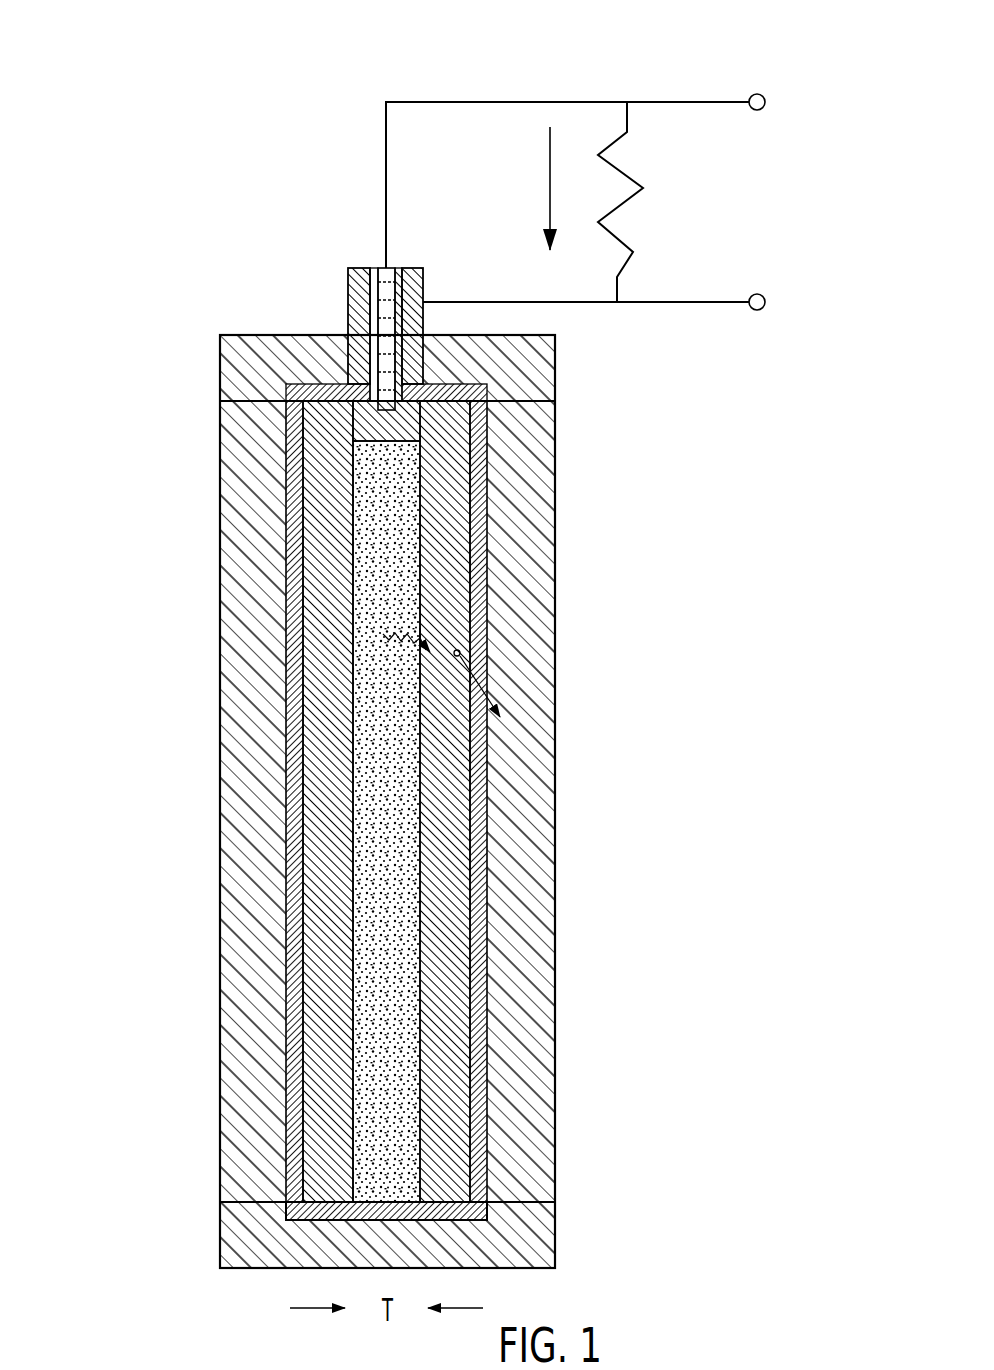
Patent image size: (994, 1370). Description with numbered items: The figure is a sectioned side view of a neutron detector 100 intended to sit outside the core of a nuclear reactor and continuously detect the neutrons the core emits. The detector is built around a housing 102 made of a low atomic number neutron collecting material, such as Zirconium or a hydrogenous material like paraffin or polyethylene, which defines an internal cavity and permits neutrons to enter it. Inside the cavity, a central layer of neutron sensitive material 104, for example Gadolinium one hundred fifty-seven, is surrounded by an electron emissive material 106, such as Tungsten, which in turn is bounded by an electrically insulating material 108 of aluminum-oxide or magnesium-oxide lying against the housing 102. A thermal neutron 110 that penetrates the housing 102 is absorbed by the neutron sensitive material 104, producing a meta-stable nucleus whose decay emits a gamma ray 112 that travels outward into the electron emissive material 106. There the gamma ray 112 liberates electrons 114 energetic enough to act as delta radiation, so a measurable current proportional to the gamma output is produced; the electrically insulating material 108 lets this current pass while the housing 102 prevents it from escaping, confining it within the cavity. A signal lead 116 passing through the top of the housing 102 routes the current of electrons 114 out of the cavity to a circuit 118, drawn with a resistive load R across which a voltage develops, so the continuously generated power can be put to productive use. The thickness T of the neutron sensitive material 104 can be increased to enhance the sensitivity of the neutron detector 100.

The neutron detector 100 is at (150, 82).
The housing 102 is at (554, 1019).
The neutron sensitive material 104 is at (423, 800).
The electron emissive material 106 is at (472, 869).
The electrically insulating material 108 is at (490, 937).
The thermal neutron 110 is at (383, 633).
The gamma ray 112 is at (420, 633).
The electrons 114 is at (465, 650).
The signal lead 116 is at (390, 313).
The circuit 118 is at (473, 172).